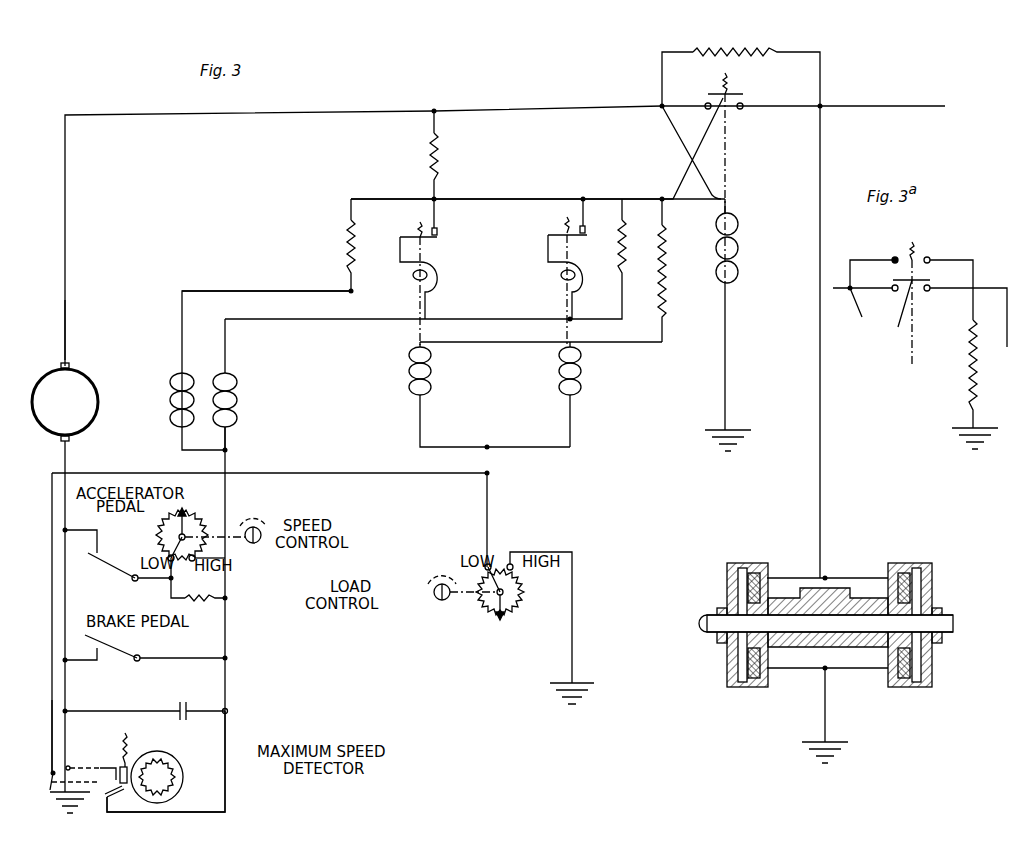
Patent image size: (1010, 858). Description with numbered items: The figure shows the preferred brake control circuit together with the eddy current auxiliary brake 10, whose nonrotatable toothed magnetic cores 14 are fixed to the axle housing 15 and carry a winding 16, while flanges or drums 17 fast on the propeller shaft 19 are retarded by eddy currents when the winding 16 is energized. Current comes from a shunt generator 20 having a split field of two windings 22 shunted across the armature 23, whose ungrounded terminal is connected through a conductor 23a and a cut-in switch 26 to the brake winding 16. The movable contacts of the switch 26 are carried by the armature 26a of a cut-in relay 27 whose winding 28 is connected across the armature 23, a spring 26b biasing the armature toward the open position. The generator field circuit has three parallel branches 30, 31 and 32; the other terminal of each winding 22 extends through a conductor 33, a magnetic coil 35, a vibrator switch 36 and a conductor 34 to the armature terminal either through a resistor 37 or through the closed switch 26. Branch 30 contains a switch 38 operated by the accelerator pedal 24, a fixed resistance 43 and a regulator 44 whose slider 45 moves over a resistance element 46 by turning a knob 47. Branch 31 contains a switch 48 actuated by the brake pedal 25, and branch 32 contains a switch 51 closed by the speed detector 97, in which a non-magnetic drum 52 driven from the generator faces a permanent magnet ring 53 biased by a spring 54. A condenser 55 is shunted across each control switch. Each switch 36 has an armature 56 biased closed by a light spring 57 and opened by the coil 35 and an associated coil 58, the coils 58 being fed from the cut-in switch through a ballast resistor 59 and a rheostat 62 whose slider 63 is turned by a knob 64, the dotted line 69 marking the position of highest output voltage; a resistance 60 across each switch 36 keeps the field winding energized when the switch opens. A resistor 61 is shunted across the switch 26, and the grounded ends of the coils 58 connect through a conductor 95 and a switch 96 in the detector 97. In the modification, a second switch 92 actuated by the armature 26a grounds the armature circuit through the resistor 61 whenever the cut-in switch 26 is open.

In FIG. 3, the auxiliary brake 10 is at (722, 594).
In FIG. 3, the toothed magnetic cores 14 is at (740, 563).
In FIG. 3, the axle housing 15 is at (832, 590).
In FIG. 3, the winding 16 is at (762, 576).
In FIG. 3, the flanges or drums 17 is at (898, 562).
In FIG. 3, the propeller shaft 19 is at (708, 623).
In FIG. 3, the generator 20 is at (60, 362).
In FIG. 3, the field windings 22 is at (226, 372).
In FIG. 3, the armature 23 is at (84, 372).
In FIG. 3, the conductor 23a is at (67, 278).
In FIG. 3, the accelerator pedal 24 is at (105, 562).
In FIG. 3, the brake pedal 25 is at (120, 650).
In FIG. 3, the cut-in switch 26 is at (738, 113).
In FIG. 3A, the cut-in switch 26 is at (891, 296).
In FIG. 3, the armature of cut-in relay 26a is at (729, 163).
In FIG. 3A, the armature of cut-in relay 26a is at (915, 316).
In FIG. 3, the spring 26b is at (729, 86).
In FIG. 3, the cut-in relay 27 is at (742, 228).
In FIG. 3, the relay winding 28 is at (740, 261).
In FIG. 3, the first field circuit branch 30 is at (152, 582).
In FIG. 3, the second field circuit branch 31 is at (212, 663).
In FIG. 3, the third field circuit branch 32 is at (214, 812).
In FIG. 3, the conductor 33 is at (266, 291).
In FIG. 3, the conductor 34 is at (513, 198).
In FIG. 3, the magnetic coil 35 is at (432, 276).
In FIG. 3, the vibrator switch 36 is at (440, 232).
In FIG. 3, the resistor 37 is at (438, 162).
In FIG. 3, the accelerator pedal switch 38 is at (82, 554).
In FIG. 3, the fixed resistance 43 is at (218, 599).
In FIG. 3, the regulator 44 is at (208, 530).
In FIG. 3, the slider 45 is at (203, 520).
In FIG. 3, the resistance element 46 is at (176, 524).
In FIG. 3, the knob 47 is at (256, 544).
In FIG. 3, the brake pedal switch 48 is at (100, 657).
In FIG. 3, the maximum speed switch 51 is at (104, 766).
In FIG. 3, the non-magnetic metallic drum 52 is at (168, 777).
In FIG. 3, the permanent magnet ring 53 is at (174, 782).
In FIG. 3, the spring 54 is at (123, 746).
In FIG. 3, the condenser 55 is at (178, 707).
In FIG. 3, the armature 56 is at (402, 240).
In FIG. 3, the light spring 57 is at (417, 228).
In FIG. 3, the coil 58 is at (408, 372).
In FIG. 3, the ballast resistor 59 is at (665, 300).
In FIG. 3, the resistance 60 is at (350, 250).
In FIG. 3, the resistor 61 is at (728, 52).
In FIG. 3A, the resistor 61 is at (968, 395).
In FIG. 3, the rheostat 62 is at (492, 612).
In FIG. 3, the slider 63 is at (504, 604).
In FIG. 3, the knob 64 is at (435, 600).
In FIG. 3, the dotted line 69 is at (513, 578).
In FIG. 3A, the second switch 92 is at (904, 257).
In FIG. 3, the conductor 95 is at (50, 733).
In FIG. 3, the switch 96 is at (47, 771).
In FIG. 3, the speed detector 97 is at (166, 763).